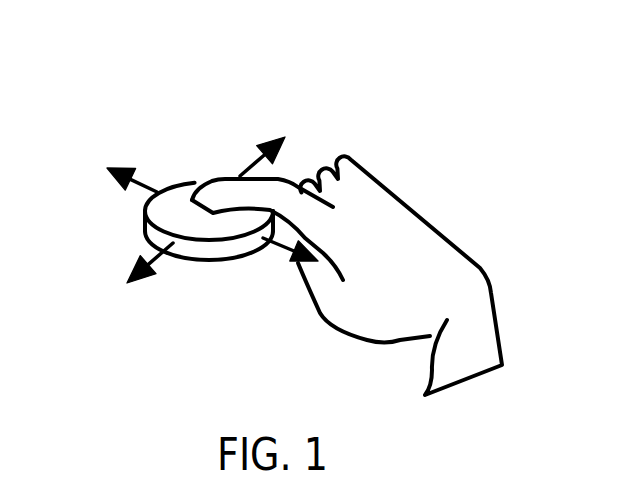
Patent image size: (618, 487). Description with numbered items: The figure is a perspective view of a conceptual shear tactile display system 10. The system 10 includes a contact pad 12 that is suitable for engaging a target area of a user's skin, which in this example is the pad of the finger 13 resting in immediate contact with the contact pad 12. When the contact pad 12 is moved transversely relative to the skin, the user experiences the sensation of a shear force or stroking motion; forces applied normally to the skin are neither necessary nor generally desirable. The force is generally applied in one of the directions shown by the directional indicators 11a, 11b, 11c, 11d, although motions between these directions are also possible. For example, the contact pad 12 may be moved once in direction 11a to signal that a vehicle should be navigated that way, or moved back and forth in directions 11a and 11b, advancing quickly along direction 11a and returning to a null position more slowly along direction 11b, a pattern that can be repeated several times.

The shear tactile display system 10 is at (127, 127).
The directional indicator 11a is at (150, 275).
The directional indicator 11b is at (280, 148).
The directional indicator 11c is at (288, 262).
The directional indicator 11d is at (117, 183).
The contact pad 12 is at (131, 222).
The finger 13 is at (260, 193).